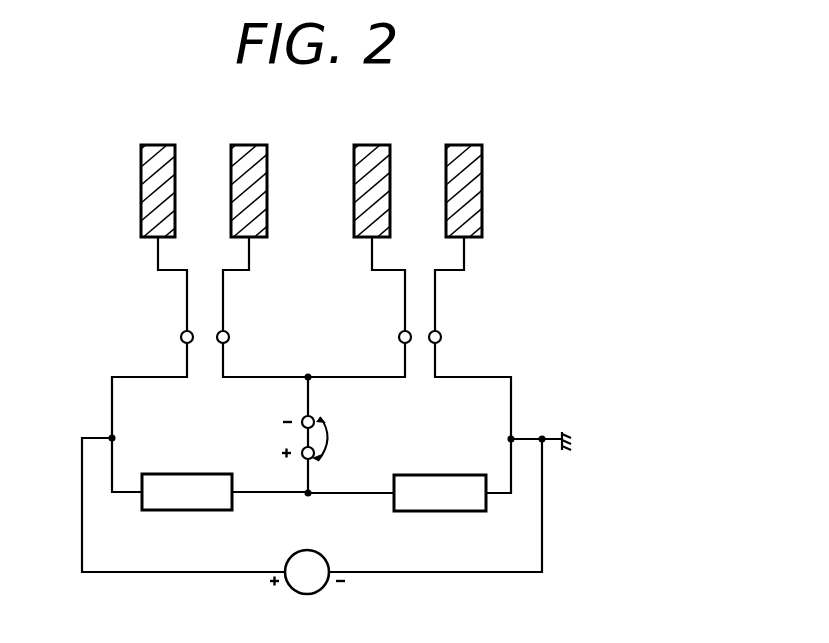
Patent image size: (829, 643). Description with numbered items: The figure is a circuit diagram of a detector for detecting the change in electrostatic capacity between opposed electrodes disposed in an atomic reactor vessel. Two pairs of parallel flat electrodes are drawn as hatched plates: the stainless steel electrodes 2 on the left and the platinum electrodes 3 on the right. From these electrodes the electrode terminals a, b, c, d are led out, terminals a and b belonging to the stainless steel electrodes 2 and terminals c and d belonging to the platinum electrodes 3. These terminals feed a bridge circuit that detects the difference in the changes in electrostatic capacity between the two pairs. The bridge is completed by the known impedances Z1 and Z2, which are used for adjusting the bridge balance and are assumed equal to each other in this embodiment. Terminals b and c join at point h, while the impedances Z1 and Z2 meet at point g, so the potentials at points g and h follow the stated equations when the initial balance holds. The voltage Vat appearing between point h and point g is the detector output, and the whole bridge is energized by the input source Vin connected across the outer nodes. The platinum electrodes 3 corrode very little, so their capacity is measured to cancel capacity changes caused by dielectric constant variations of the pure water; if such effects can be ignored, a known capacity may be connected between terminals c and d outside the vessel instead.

The stainless steel electrodes 2 is at (175, 143).
The platinum electrodes 3 is at (390, 143).
The electrode terminal a is at (178, 336).
The electrode terminal b is at (232, 336).
The electrode terminal c is at (395, 336).
The electrode terminal d is at (446, 336).
The point h is at (308, 389).
The point g is at (308, 484).
The known impedance Z1 is at (187, 492).
The known impedance Z2 is at (440, 493).
The voltage between points g and h Vat is at (331, 439).
The input voltage source Vin is at (307, 572).